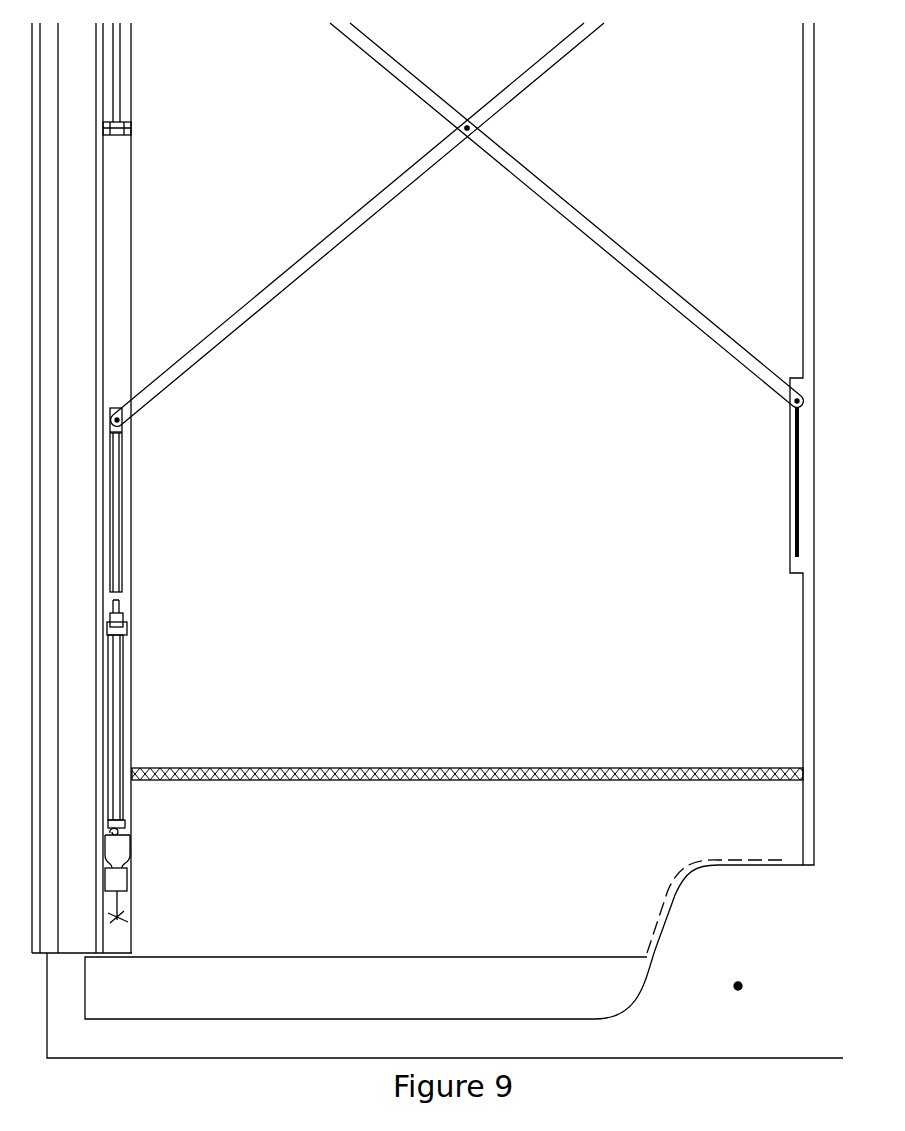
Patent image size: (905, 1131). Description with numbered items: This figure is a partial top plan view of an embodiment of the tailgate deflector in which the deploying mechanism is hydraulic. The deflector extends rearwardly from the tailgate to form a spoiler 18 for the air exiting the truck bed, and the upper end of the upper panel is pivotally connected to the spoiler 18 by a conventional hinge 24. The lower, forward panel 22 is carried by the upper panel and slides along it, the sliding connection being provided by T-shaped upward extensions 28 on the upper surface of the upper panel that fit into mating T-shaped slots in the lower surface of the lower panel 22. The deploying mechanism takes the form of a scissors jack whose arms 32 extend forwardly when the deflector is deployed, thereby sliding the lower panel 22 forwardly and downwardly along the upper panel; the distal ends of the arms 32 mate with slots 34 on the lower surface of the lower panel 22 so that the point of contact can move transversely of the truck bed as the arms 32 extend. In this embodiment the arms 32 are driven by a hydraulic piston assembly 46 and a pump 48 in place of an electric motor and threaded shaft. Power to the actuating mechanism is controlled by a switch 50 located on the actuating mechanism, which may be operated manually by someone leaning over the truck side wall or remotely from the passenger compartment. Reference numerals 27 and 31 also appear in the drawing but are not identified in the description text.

The spoiler 18 is at (73, 775).
The lower, forward panel 22 is at (821, 307).
The hinge 24 is at (740, 983).
The pivot bracket 27 is at (128, 430).
The T-shaped upward extensions 28 is at (555, 772).
The actuator rod 31 is at (117, 553).
The arms of the jack 32 is at (630, 275).
The slots 34 is at (788, 518).
The hydraulic piston assembly 46 is at (108, 708).
The pump 48 is at (120, 882).
The switch 50 is at (122, 908).